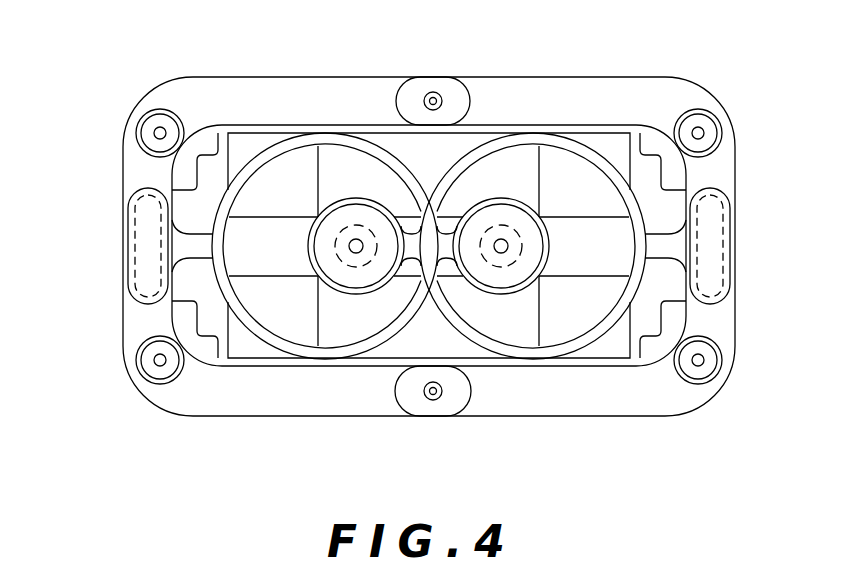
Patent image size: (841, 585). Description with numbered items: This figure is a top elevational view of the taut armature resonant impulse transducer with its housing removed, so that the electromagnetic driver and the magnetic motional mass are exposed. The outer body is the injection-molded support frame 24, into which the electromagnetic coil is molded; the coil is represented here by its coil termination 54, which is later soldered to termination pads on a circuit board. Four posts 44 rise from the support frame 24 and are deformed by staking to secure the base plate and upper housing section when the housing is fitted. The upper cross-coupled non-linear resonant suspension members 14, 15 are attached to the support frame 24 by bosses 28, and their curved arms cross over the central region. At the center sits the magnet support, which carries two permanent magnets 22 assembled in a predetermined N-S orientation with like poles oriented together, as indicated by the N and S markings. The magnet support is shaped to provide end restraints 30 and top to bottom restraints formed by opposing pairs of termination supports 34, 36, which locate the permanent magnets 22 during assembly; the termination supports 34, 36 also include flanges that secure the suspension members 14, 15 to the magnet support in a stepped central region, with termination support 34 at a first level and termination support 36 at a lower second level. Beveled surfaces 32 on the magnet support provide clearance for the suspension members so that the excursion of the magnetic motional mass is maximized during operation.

The upper cross-coupled non-linear resonant suspension member 14 is at (277, 138).
The upper cross-coupled non-linear resonant suspension member 15 is at (575, 140).
The permanent magnet 22 is at (238, 140).
The support frame 24 is at (593, 77).
The boss 28 is at (135, 258).
The end restraint 30 is at (648, 188).
The beveled surface 32 is at (580, 258).
The termination support 34 is at (343, 273).
The termination support 36 is at (508, 277).
The post 44 is at (142, 118).
The coil termination 54 is at (433, 90).